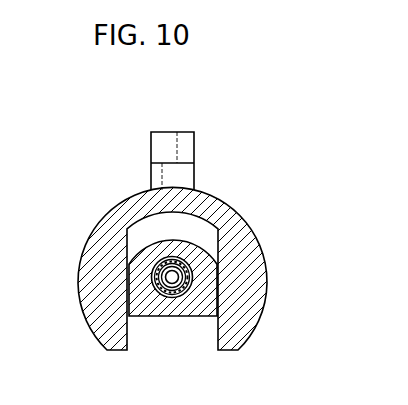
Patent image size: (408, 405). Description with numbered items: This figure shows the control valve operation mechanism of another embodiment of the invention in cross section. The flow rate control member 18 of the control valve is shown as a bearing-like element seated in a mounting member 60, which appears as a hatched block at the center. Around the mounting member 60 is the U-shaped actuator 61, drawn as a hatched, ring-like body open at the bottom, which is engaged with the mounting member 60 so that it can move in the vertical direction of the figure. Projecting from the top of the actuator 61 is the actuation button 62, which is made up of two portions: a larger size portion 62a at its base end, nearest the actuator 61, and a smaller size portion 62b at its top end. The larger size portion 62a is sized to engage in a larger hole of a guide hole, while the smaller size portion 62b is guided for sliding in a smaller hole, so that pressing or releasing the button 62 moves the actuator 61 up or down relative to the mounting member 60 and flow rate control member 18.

The flow rate control member 18 is at (160, 297).
The mounting member 60 is at (196, 305).
The actuator 61 is at (248, 313).
The actuation button 62 is at (177, 152).
The larger size portion 62a is at (156, 177).
The smaller size portion 62b is at (159, 149).